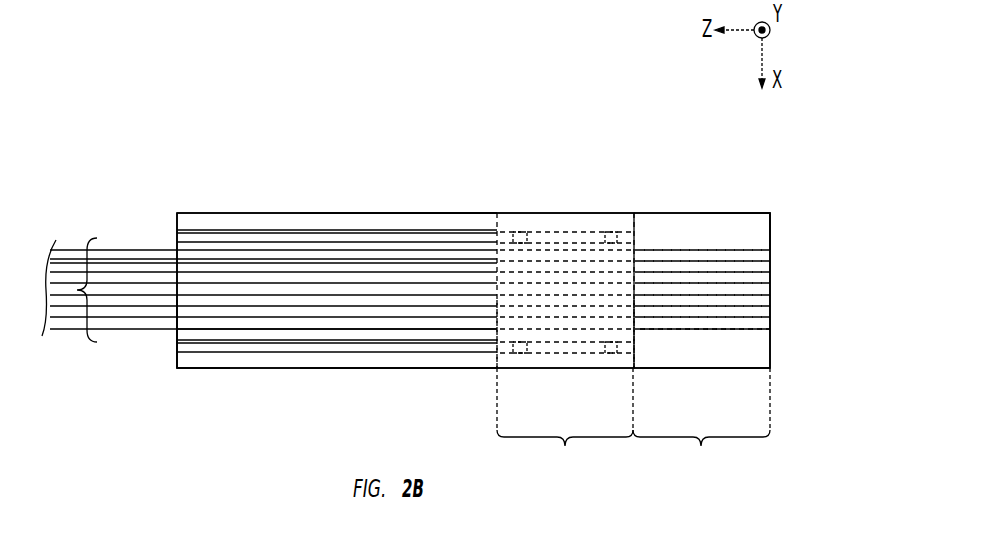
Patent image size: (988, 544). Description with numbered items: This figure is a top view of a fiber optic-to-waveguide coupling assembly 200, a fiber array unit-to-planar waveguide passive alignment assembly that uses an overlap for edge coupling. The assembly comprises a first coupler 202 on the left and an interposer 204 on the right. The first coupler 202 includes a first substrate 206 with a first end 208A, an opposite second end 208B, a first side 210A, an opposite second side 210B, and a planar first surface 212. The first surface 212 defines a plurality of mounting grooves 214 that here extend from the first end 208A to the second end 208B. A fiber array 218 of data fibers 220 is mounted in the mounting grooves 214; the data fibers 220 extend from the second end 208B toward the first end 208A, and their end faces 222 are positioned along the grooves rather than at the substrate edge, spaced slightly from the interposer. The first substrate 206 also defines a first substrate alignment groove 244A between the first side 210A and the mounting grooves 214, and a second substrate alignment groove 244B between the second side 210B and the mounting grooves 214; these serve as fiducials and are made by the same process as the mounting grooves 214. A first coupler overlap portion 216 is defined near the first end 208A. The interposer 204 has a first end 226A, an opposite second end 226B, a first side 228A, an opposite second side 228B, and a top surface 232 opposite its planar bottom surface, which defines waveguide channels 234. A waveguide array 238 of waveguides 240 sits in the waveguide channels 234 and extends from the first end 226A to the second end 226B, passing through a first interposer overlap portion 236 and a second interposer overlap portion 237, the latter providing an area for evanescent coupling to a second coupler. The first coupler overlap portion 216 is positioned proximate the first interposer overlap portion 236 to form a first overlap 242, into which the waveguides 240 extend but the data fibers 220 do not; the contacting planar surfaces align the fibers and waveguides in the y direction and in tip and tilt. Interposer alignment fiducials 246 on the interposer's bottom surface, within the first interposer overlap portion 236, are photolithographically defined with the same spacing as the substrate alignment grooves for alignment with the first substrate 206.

The fiber optic-to-waveguide coupling assembly 200 is at (572, 145).
The first coupler 202 is at (205, 206).
The interposer 204 is at (708, 206).
The first substrate 206 is at (357, 218).
The first end 208A is at (672, 422).
The second end 208B is at (177, 357).
The first side 210A is at (437, 213).
The second side 210B is at (407, 393).
The first surface 212 is at (417, 212).
The mounting grooves 214 is at (297, 340).
The first coupler overlap portion 216 is at (633, 345).
The fiber array 218 is at (75, 288).
The data fibers 220 is at (115, 250).
The end faces 222 is at (513, 383).
The first end 226A is at (490, 217).
The second end 226B is at (772, 223).
The first side 228A is at (735, 408).
The second side 228B is at (747, 213).
The top surface 232 is at (722, 228).
The waveguide channels 234 is at (735, 385).
The first interposer overlap portion 236 is at (633, 345).
The second interposer overlap portion 237 is at (701, 420).
The waveguide array 238 is at (783, 330).
The waveguides 240 is at (708, 385).
The first overlap 242 is at (633, 345).
The first substrate alignment groove 244A is at (240, 229).
The second substrate alignment groove 244B is at (229, 388).
The interposer alignment fiducials 246 is at (522, 353).